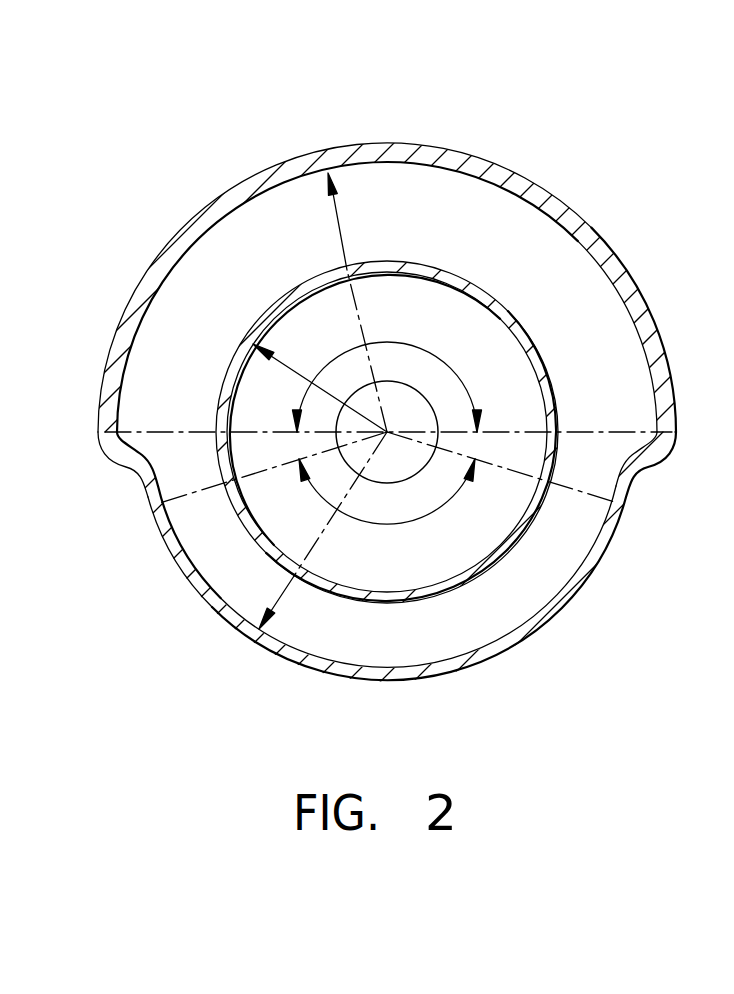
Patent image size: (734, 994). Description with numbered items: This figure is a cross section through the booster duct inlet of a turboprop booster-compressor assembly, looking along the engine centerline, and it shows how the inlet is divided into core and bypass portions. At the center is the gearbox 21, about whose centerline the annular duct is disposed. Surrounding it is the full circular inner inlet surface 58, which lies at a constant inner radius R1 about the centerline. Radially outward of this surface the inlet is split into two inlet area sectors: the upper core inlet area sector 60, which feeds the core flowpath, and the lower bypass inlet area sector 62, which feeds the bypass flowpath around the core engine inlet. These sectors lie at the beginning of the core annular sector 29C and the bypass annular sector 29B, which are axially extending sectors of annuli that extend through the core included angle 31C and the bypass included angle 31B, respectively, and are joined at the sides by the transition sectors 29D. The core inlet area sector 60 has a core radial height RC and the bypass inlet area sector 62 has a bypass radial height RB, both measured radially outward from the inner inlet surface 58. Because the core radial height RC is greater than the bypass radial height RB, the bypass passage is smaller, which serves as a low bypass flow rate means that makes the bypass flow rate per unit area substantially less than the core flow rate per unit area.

The gearbox 21 is at (436, 402).
The inner inlet surface 58 is at (278, 293).
The core inlet area sector 60 is at (549, 256).
The bypass inlet area sector 62 is at (540, 583).
The bypass annular sector 29B is at (432, 632).
The core annular sector 29C is at (495, 216).
The transition sectors 29D is at (173, 465).
The bypass included angle 31B is at (436, 515).
The core included angle 31C is at (384, 340).
The core radial height RC is at (340, 228).
The inner radius R1 is at (278, 360).
The bypass radial height RB is at (287, 597).